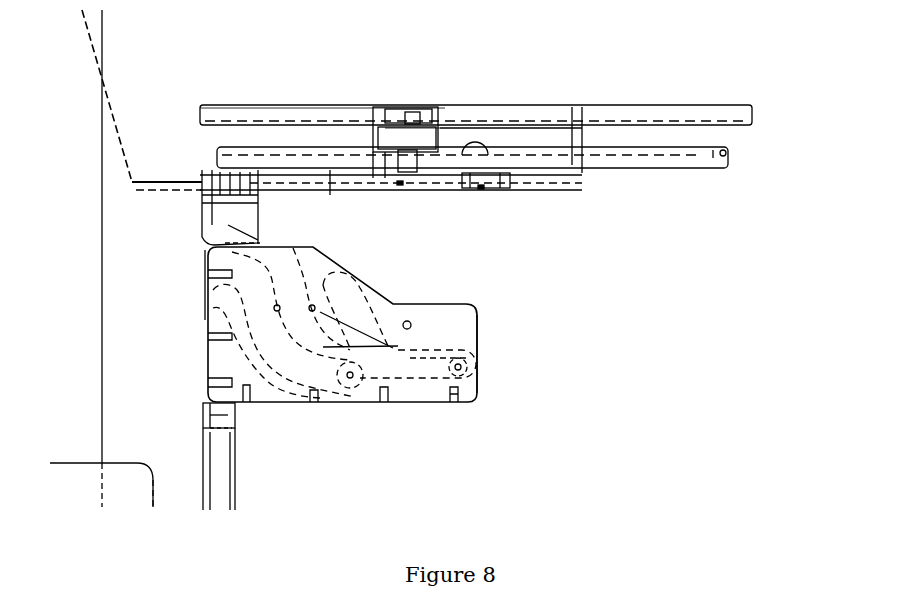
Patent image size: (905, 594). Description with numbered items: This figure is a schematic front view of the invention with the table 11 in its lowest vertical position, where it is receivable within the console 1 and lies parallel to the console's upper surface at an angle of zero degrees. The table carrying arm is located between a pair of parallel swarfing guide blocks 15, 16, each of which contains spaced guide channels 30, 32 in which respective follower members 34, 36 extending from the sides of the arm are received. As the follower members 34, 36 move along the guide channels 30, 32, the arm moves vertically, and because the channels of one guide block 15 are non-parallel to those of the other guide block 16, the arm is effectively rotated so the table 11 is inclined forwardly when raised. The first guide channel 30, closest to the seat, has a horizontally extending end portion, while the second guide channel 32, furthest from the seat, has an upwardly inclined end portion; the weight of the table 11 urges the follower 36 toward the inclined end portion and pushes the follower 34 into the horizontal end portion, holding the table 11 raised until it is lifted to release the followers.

The console 1 is at (707, 107).
The table 11 is at (690, 157).
The guide block 15 is at (455, 300).
The guide block 16 is at (478, 311).
The first guide channel 30 is at (284, 370).
The second guide channel 32 is at (355, 313).
The follower member 34 is at (350, 378).
The follower member 36 is at (463, 368).